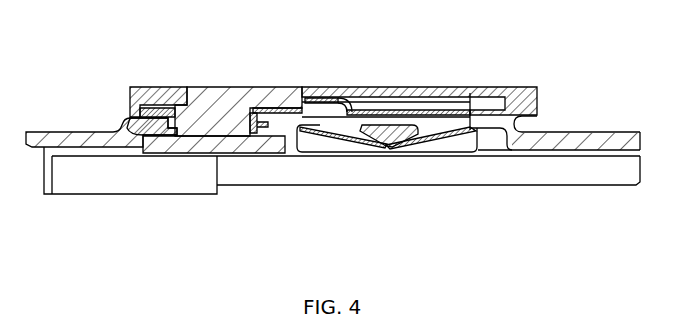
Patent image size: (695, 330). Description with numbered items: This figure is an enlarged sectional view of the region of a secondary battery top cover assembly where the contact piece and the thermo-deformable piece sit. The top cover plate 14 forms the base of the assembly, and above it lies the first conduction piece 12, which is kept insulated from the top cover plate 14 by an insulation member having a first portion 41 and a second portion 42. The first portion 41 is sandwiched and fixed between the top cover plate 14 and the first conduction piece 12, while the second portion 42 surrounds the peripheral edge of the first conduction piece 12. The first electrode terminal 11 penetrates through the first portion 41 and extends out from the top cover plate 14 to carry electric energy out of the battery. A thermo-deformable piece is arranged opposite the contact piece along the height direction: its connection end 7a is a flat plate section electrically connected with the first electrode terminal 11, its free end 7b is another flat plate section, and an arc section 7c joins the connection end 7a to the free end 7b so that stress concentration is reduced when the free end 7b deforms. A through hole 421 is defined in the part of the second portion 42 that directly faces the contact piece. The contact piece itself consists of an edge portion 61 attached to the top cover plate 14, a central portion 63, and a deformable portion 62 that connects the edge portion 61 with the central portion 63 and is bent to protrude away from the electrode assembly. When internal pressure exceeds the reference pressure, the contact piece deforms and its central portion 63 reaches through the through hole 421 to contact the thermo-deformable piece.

The first electrode terminal 11 is at (212, 100).
The first conduction piece 12 is at (158, 88).
The top cover plate 14 is at (90, 138).
The first portion 41 is at (118, 125).
The second portion 42 is at (521, 92).
The through hole 421 is at (458, 113).
The connection end 7a is at (313, 84).
The free end 7b is at (408, 92).
The arc section 7c is at (354, 86).
The edge portion 61 is at (473, 131).
The deformable portion 62 is at (335, 137).
The central portion 63 is at (388, 146).